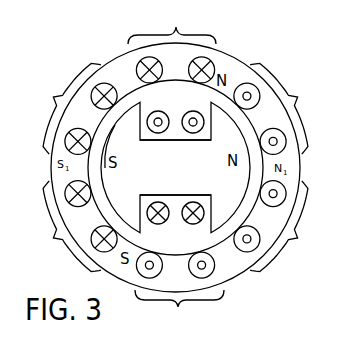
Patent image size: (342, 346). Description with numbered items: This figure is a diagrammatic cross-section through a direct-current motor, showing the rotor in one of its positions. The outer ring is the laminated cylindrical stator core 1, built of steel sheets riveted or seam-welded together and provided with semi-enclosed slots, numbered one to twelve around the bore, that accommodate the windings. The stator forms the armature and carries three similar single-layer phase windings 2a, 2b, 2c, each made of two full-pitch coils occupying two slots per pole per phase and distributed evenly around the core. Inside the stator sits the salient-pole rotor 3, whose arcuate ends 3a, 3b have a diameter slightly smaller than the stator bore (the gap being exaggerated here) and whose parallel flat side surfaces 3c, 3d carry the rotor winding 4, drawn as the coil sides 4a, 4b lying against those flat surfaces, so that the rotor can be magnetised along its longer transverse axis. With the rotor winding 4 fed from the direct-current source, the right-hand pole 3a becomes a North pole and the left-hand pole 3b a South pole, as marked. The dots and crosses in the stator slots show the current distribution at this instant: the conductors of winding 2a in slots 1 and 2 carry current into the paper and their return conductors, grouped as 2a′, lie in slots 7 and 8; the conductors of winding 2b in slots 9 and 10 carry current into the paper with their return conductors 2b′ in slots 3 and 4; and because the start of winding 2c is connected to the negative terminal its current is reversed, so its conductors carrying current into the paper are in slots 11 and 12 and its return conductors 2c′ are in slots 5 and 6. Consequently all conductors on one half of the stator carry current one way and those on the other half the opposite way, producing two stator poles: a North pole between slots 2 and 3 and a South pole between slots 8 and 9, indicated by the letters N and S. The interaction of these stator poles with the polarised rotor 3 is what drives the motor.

The stator core 1 is at (302, 154).
The stator slot 2 is at (202, 64).
The rotor 3 is at (247, 89).
The rotor winding 4 is at (274, 136).
The stator slot 5 is at (277, 194).
The stator slot 6 is at (252, 239).
The stator slot 7 is at (202, 273).
The stator slot 8 is at (144, 268).
The stator slot 9 is at (98, 239).
The stator slot 10 is at (70, 192).
The stator slot 11 is at (75, 136).
The stator slot 12 is at (104, 90).
The stator winding 2a is at (172, 45).
The stator pole pair 2a′ is at (175, 292).
The stator winding 2b is at (73, 225).
The stator pole pair 2b′ is at (278, 108).
The stator winding 2c is at (277, 226).
The stator pole pair 2c′ is at (73, 108).
The arcuate end 3a is at (248, 185).
The arcuate end 3b is at (124, 146).
The flat side surface 3c is at (175, 154).
The flat side surface 3d is at (175, 182).
The rotor winding 4a is at (175, 225).
The rotor winding 4b is at (175, 110).